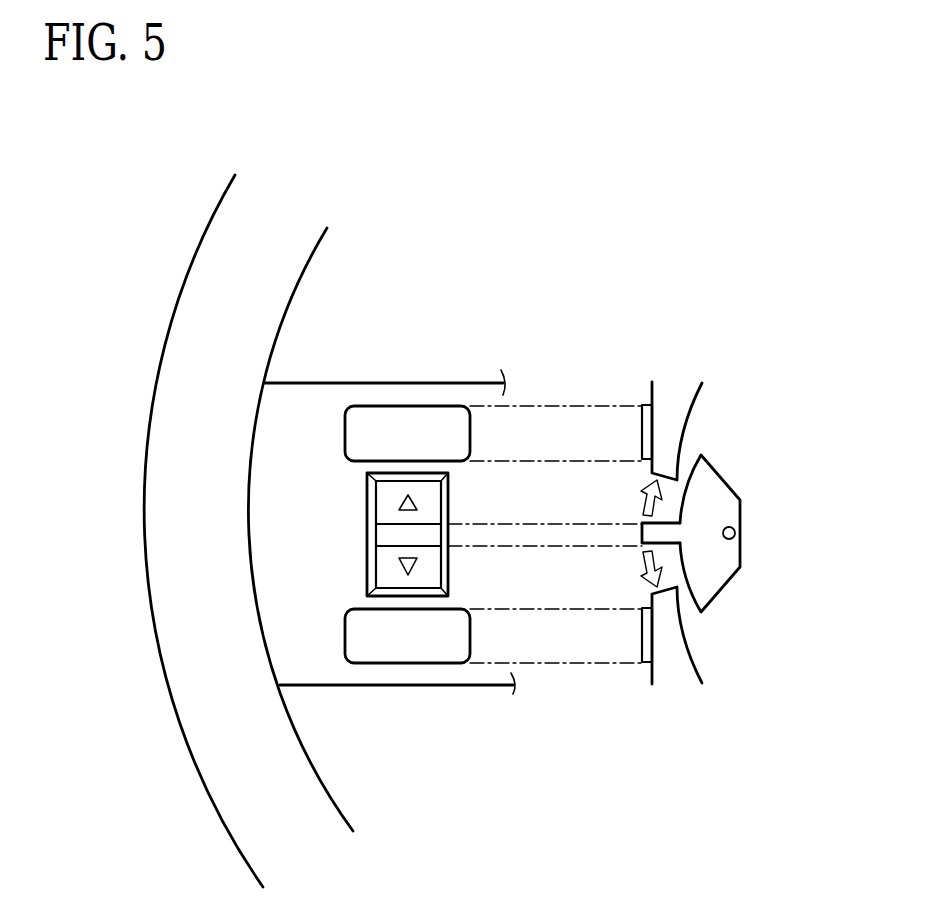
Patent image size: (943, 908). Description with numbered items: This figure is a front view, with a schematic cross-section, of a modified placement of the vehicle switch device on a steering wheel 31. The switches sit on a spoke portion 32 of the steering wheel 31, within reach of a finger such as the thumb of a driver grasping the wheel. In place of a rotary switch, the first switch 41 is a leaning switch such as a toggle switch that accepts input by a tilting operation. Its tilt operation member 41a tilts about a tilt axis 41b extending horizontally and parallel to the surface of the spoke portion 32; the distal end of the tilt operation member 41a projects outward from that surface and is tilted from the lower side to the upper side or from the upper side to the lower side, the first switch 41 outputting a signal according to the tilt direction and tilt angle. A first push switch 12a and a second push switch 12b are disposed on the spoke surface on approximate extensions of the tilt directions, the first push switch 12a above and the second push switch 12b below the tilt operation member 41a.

The steering wheel 31 is at (207, 300).
The spoke portion 32 is at (415, 392).
The first push switch 12a is at (447, 427).
The second push switch 12b is at (432, 648).
The first switch 41 is at (368, 522).
The tilt operation member 41a is at (385, 535).
The tilt axis 41b is at (735, 529).